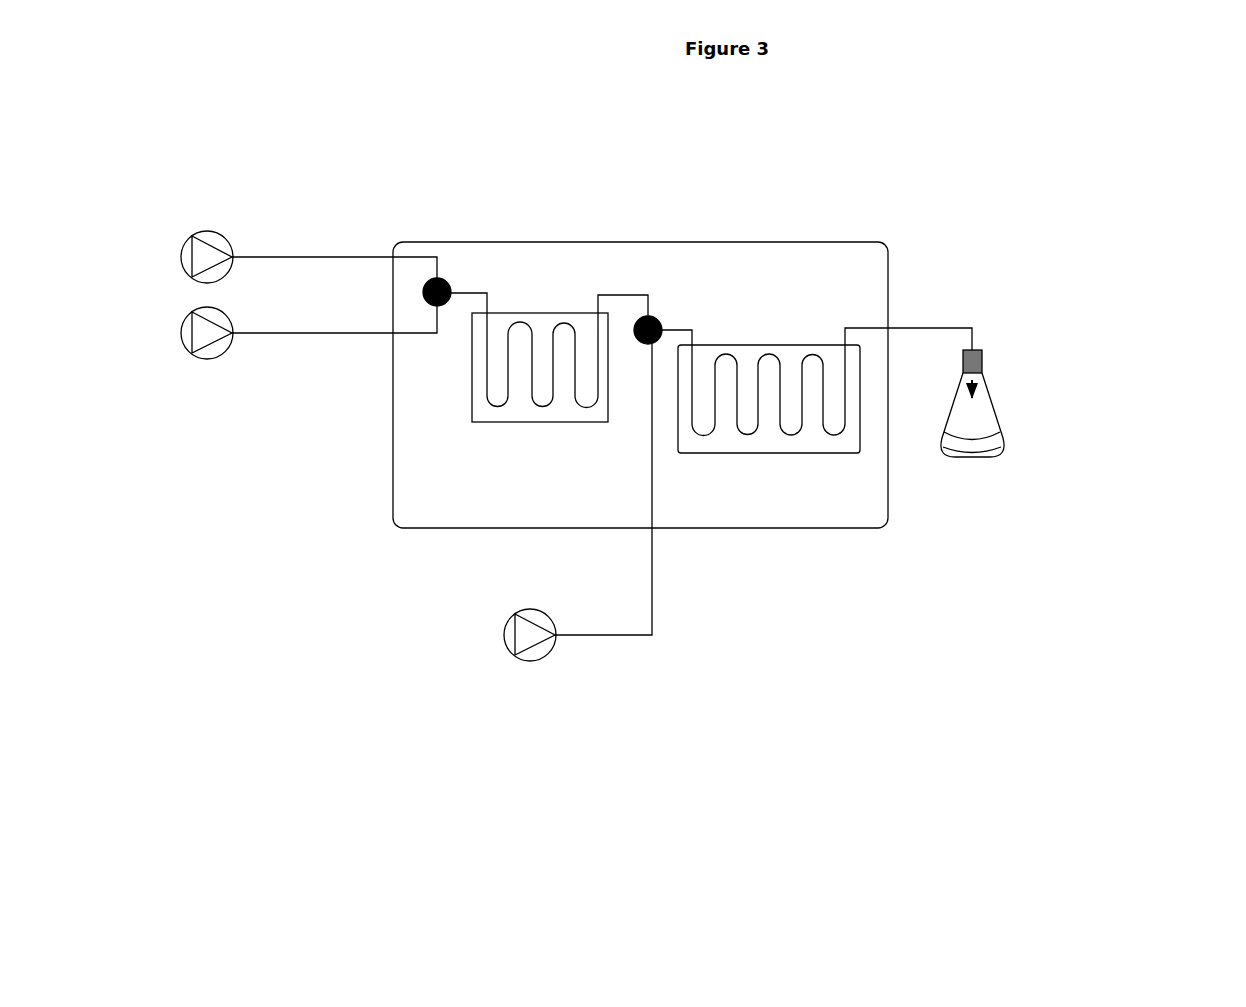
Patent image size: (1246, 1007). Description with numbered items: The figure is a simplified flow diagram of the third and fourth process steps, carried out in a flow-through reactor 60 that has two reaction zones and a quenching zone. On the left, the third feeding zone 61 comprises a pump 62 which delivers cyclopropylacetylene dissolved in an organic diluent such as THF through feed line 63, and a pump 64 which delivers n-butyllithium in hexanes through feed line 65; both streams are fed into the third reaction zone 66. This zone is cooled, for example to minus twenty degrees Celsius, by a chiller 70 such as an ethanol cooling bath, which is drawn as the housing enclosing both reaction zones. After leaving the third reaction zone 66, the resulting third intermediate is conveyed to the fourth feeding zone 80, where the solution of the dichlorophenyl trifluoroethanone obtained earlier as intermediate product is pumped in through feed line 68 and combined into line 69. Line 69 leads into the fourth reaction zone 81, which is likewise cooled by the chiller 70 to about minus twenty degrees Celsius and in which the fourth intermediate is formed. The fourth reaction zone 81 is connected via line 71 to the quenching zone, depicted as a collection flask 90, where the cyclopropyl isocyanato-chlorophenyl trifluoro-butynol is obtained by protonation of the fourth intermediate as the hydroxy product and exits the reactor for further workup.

The flow-through reactor 60 is at (1000, 604).
The third feeding zone 61 is at (361, 503).
The pump 62 is at (240, 238).
The feed line 63 is at (323, 255).
The pump 64 is at (238, 366).
The feed line 65 is at (323, 336).
The third reaction zone 66 is at (546, 308).
The feed line 68 is at (634, 650).
The line 69 is at (682, 325).
The chiller 70 is at (866, 240).
The line 71 is at (929, 313).
The fourth feeding zone 80 is at (661, 348).
The fourth reaction zone 81 is at (792, 442).
The collection flask for P-OH 90 is at (1004, 417).